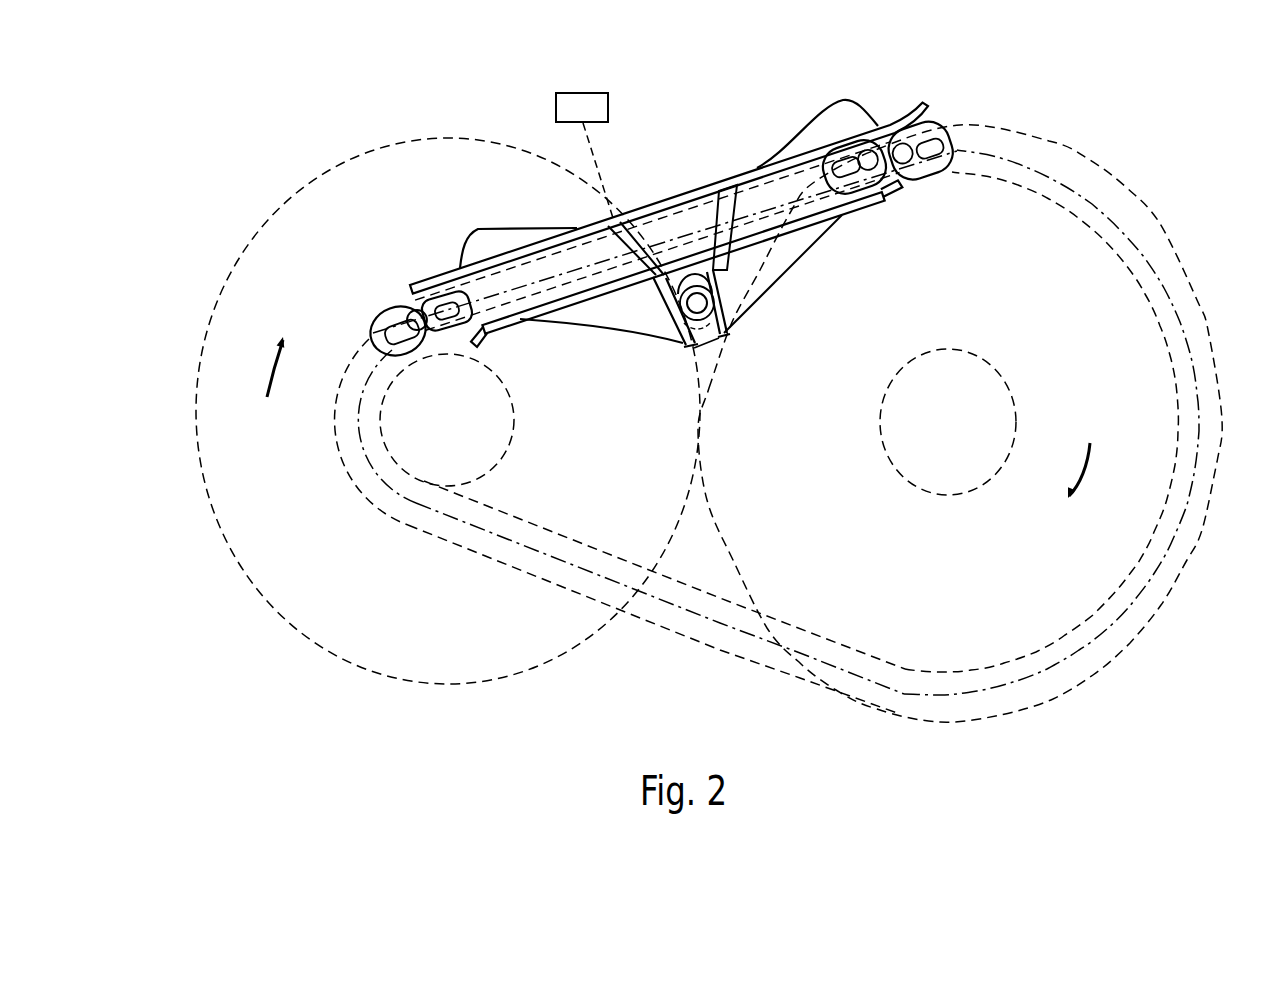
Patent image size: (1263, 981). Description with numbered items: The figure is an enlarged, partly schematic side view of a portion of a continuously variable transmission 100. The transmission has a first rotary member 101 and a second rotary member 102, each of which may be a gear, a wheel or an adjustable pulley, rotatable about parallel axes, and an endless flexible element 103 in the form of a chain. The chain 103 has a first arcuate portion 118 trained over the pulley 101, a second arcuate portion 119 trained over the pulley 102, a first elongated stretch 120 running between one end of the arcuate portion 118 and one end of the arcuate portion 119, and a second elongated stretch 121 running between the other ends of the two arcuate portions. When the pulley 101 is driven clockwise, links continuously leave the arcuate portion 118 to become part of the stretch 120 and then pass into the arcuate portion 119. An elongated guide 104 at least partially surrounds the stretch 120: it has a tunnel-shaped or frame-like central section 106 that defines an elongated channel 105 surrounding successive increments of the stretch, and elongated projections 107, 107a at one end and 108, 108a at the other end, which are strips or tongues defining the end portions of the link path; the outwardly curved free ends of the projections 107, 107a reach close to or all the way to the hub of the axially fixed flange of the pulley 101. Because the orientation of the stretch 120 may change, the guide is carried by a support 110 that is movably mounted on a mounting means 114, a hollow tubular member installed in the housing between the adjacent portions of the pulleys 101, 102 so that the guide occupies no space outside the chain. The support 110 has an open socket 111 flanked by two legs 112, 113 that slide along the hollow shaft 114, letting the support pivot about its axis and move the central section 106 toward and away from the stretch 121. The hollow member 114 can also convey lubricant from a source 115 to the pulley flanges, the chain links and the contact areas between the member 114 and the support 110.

The continuously variable transmission 100 is at (666, 90).
The first rotary member 101 is at (372, 168).
The second rotary member 102 is at (1177, 258).
The endless flexible element 103 is at (845, 101).
The elongated guide 104 is at (670, 220).
The elongated channel 105 is at (573, 257).
The central section 106 is at (653, 227).
The elongated projection 107 is at (417, 282).
The elongated projection 107a is at (487, 335).
The elongated projection 108 is at (917, 113).
The elongated projection 108a is at (890, 195).
The support 110 is at (711, 352).
The socket 111 is at (692, 362).
The leg 112 is at (728, 342).
The leg 113 is at (687, 347).
The mounting means 114 is at (723, 298).
The fluid source 115 is at (556, 100).
The first arcuate portion 118 is at (372, 505).
The second arcuate portion 119 is at (1107, 182).
The first elongated stretch 120 is at (770, 180).
The second elongated stretch 121 is at (673, 630).